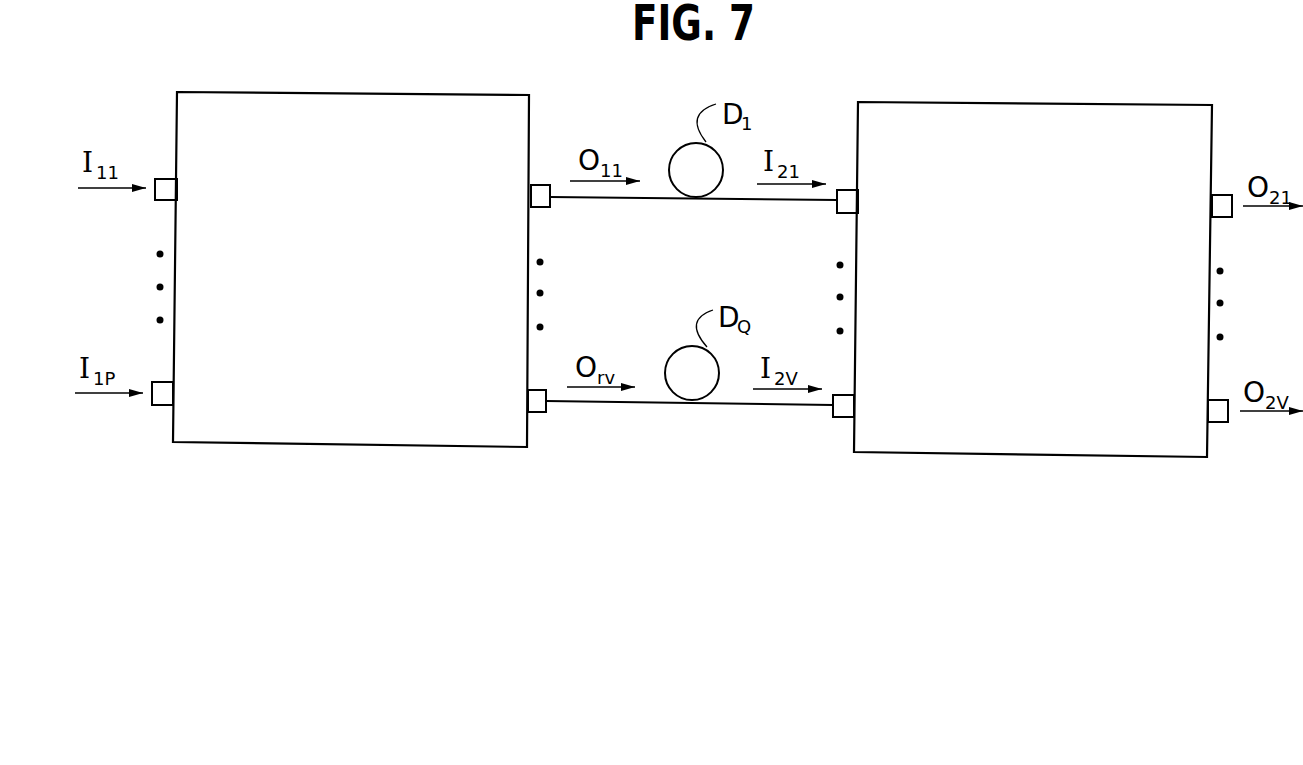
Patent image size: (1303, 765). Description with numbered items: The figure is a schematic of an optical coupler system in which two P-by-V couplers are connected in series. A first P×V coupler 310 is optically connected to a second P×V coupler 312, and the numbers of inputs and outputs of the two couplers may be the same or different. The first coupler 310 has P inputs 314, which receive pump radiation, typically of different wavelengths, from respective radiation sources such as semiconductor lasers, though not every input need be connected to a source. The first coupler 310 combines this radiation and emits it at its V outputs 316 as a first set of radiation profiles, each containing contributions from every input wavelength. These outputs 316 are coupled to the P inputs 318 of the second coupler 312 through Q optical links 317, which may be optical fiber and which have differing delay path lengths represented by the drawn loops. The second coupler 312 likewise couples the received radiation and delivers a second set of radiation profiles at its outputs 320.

The first P×V coupler 310 is at (211, 91).
The second P×V coupler 312 is at (902, 102).
The inputs of first coupler 314 is at (158, 179).
The outputs of first coupler 316 is at (541, 185).
The optical links 317 is at (722, 200).
The inputs of second coupler 318 is at (846, 190).
The outputs of second coupler 320 is at (1222, 195).